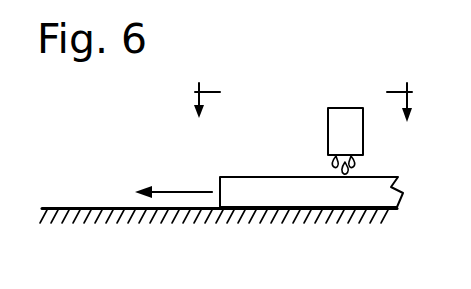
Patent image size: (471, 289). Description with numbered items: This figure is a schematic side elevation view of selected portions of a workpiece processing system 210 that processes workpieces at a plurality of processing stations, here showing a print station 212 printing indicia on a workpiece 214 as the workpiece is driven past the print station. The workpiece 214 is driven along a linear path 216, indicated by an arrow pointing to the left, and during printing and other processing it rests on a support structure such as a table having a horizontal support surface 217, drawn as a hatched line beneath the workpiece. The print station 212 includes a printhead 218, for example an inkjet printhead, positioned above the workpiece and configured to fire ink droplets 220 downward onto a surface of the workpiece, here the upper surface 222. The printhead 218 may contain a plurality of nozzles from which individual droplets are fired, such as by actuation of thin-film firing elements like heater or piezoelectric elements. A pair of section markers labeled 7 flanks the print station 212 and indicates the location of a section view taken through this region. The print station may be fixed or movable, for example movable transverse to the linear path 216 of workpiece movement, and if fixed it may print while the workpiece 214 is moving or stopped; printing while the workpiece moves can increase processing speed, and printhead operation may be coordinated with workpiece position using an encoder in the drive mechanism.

The section line 7- 7 is at (304, 115).
The workpiece processing system 210 is at (63, 121).
The print station 212 is at (312, 113).
The workpiece 214 is at (267, 190).
The linear path 216 is at (175, 191).
The horizontal support surface 217 is at (105, 207).
The printhead 218 is at (328, 140).
The ink droplets 220 is at (370, 164).
The upper surface 222 is at (285, 177).